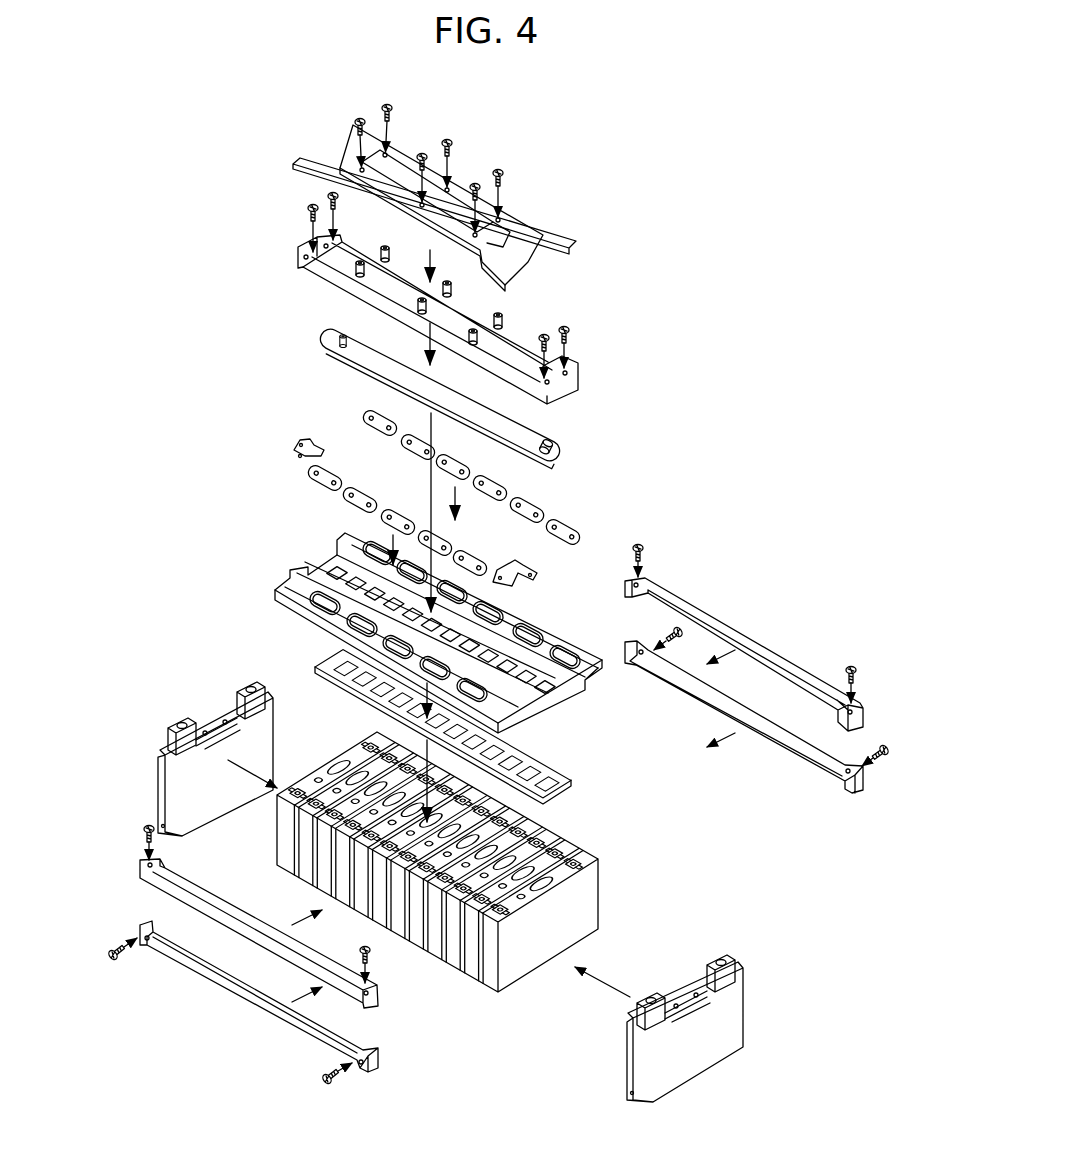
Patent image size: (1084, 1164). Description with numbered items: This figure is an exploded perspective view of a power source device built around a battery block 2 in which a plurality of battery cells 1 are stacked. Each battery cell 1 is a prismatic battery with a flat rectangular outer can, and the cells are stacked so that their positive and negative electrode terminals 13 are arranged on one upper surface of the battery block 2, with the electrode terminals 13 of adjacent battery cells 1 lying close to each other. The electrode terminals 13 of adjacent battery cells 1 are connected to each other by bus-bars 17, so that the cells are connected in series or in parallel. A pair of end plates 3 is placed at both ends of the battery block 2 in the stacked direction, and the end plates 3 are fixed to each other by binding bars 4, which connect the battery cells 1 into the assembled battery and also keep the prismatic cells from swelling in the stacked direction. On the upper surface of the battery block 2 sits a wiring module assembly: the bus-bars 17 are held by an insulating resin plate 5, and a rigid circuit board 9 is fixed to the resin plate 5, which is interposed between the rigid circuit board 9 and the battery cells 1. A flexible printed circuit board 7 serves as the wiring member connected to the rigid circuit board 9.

The battery cell 1 is at (285, 850).
The battery block 2 is at (461, 907).
The end plate 3 is at (205, 795).
The binding bar 4 is at (578, 378).
The resin plate 5 is at (260, 579).
The flexible printed circuit board 7 is at (312, 174).
The rigid circuit board 9 is at (522, 218).
The electrode terminal 13 is at (298, 790).
The bus-bar 17 is at (340, 487).